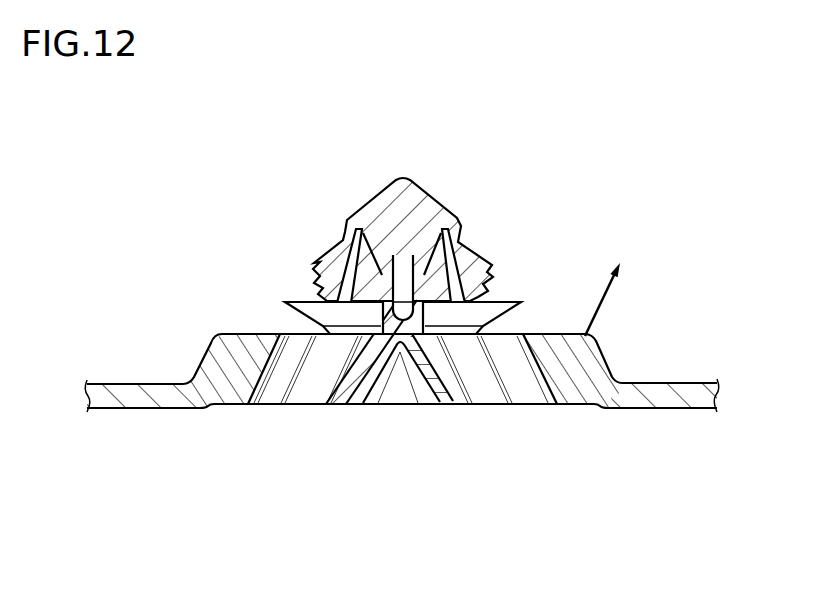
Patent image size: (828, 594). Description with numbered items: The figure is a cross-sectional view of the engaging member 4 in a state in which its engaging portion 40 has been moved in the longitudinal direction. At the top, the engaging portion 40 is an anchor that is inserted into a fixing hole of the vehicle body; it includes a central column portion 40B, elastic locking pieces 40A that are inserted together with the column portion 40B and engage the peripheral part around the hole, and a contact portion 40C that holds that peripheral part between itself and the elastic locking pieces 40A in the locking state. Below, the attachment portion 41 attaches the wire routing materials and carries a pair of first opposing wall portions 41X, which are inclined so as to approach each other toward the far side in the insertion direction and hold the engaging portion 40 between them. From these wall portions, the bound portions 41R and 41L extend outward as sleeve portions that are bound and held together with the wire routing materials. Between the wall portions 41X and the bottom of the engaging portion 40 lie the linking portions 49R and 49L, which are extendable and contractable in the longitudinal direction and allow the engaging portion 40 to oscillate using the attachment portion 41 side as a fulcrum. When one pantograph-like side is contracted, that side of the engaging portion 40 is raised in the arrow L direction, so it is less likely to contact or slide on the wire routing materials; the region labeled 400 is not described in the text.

The engaging member 4 is at (213, 186).
The engaging portion 40 is at (378, 264).
The elastic locking piece 40A is at (312, 262).
The column portion 40B is at (382, 272).
The contact portion 40C is at (316, 301).
The attachment portion 41 is at (392, 384).
The first opposing wall portions 41X is at (222, 355).
The bound portion 41L is at (138, 398).
The bound portion 41R is at (689, 398).
The second side linking portion 49L is at (319, 394).
The first side linking portion 49R is at (489, 389).
The through hole 400 is at (370, 382).
The arrow L direction L is at (598, 302).